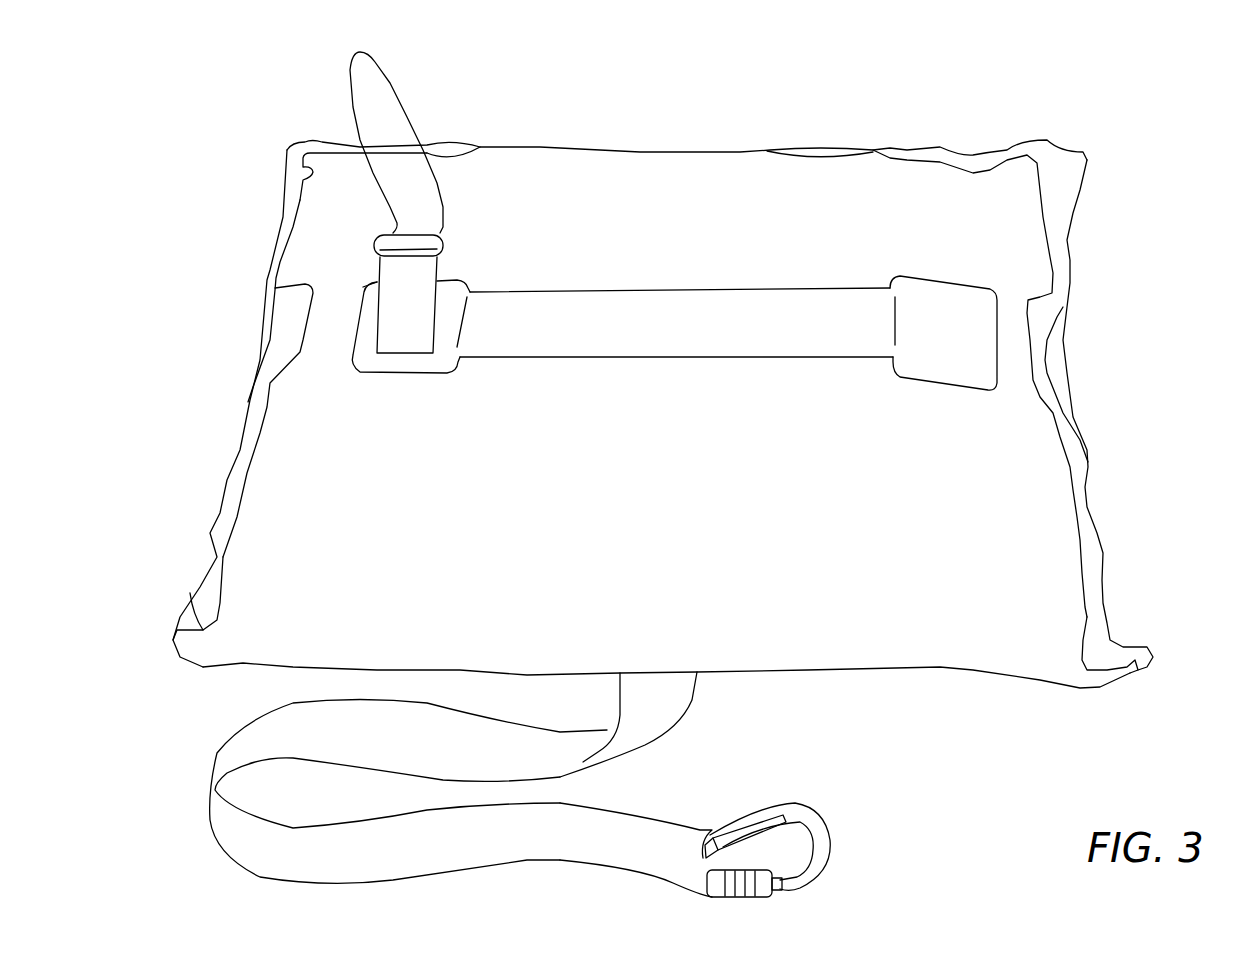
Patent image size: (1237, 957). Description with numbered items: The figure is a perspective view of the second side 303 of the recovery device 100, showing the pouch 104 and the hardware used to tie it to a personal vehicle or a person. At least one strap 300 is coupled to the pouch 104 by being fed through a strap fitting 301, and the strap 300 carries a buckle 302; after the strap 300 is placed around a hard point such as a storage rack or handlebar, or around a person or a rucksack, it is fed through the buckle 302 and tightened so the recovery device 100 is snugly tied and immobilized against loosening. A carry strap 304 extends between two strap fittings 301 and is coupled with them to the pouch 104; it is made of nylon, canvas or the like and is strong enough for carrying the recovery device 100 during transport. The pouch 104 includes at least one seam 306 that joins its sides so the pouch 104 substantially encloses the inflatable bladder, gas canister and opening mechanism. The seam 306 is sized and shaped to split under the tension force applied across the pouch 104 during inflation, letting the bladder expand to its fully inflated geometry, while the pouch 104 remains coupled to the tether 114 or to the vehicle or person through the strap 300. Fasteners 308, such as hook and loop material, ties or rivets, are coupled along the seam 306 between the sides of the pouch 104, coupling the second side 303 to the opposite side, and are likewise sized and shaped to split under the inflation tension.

The recovery device 100 is at (1145, 106).
The pouch 104 is at (963, 662).
The tether 114 is at (647, 728).
The strap 300 is at (387, 88).
The strap fitting 301 is at (390, 366).
The buckle 302 is at (437, 243).
The second side 303 is at (825, 668).
The carry strap 304 is at (830, 293).
The seam 306 is at (300, 172).
The fasteners 308 is at (465, 142).